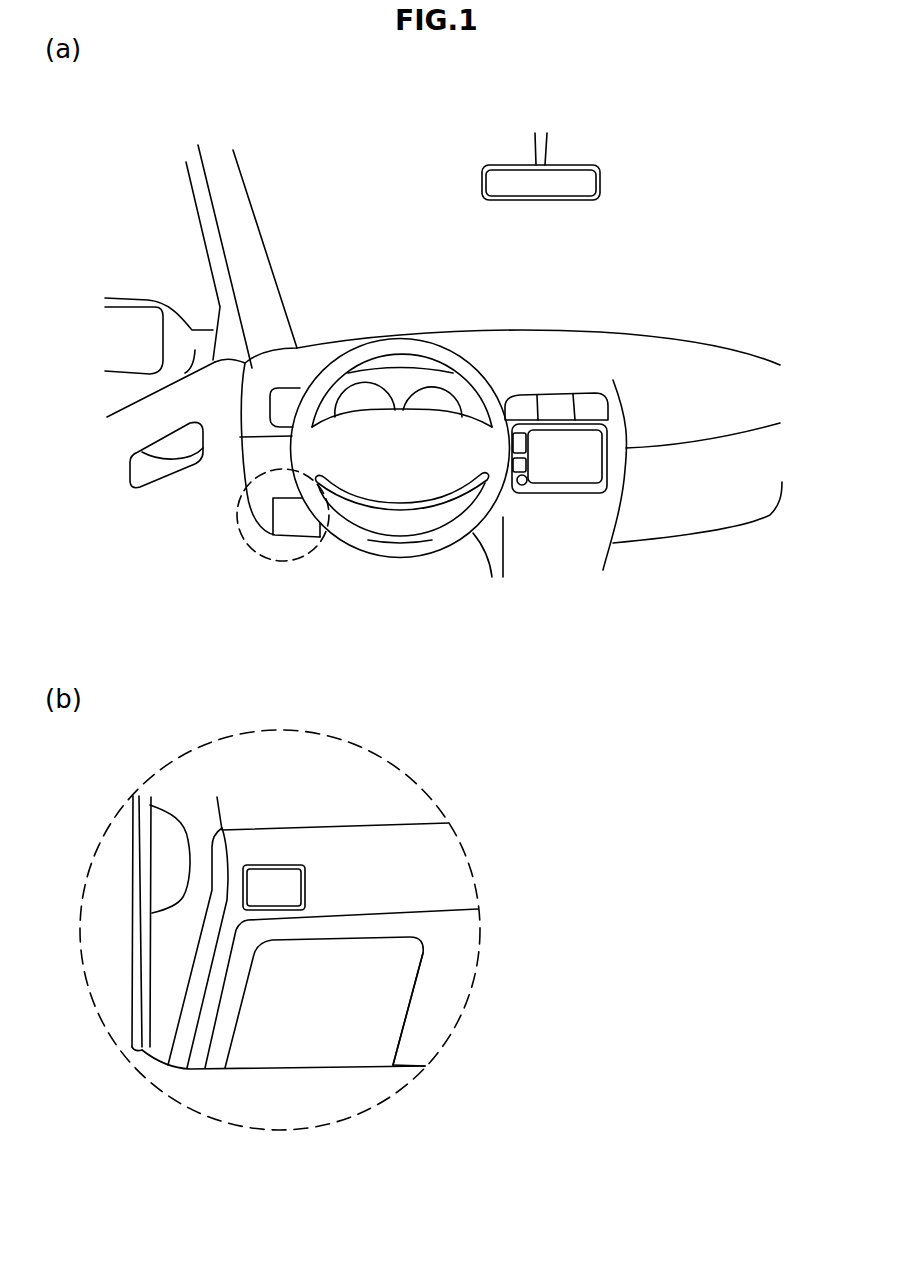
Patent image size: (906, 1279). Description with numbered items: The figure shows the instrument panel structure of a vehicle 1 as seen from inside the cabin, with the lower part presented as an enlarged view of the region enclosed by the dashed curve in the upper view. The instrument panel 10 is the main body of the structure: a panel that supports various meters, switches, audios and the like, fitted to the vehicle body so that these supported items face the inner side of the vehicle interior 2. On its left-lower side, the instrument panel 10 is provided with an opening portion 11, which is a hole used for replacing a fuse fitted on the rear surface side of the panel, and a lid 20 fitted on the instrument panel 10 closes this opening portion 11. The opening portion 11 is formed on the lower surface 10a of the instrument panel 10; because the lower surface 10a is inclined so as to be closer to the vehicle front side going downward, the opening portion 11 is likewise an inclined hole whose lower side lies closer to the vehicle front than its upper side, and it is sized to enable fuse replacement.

The vehicle 1 is at (112, 266).
The vehicle interior 2 is at (685, 301).
The instrument panel 10 is at (650, 500).
The lower surface 10a is at (420, 1047).
The opening portion 11 is at (419, 971).
The lid 20 is at (387, 1020).